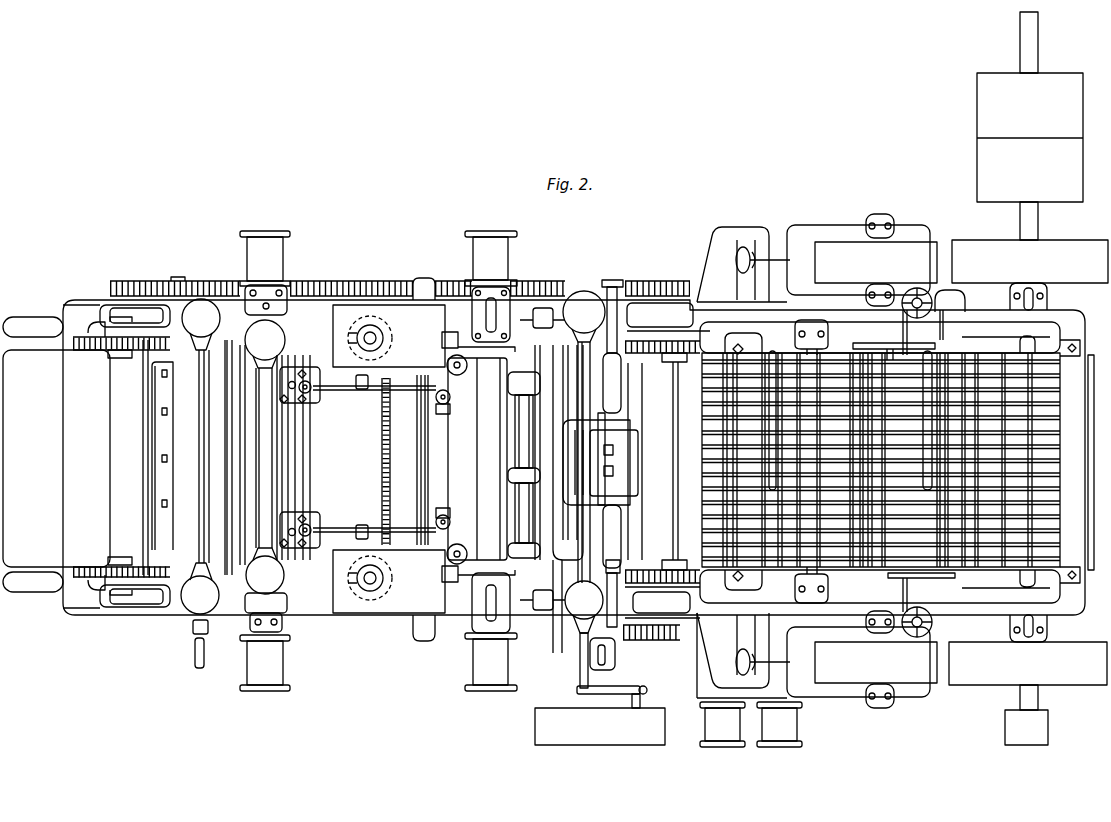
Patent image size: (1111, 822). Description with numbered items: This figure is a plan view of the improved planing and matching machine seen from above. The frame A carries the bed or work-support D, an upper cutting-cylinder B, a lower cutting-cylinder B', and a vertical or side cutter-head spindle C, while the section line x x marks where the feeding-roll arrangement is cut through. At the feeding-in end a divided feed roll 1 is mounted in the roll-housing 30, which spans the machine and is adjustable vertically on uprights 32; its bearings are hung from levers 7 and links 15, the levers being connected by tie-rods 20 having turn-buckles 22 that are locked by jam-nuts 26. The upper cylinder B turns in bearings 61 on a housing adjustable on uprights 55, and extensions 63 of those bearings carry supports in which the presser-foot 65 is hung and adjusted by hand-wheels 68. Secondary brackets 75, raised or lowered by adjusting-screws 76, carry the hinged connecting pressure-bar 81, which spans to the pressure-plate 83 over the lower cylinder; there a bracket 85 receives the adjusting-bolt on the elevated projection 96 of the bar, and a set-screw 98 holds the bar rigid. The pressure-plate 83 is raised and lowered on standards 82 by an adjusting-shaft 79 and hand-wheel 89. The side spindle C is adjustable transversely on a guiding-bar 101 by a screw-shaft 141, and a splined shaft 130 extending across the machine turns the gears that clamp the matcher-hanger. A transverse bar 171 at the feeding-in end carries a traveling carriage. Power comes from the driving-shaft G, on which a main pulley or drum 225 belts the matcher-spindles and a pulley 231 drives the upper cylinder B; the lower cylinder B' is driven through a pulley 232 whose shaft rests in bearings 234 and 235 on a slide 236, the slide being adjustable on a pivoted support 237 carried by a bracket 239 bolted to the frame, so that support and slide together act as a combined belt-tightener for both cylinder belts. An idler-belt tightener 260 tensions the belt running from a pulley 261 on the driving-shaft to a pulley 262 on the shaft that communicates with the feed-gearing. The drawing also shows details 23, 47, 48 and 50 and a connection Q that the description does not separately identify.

The feed roll 1 is at (628, 400).
The lever 7 is at (611, 280).
The link 15 is at (613, 470).
The tie-rod 20 is at (664, 461).
The turn-buckle 22 is at (622, 393).
The plunger tip 23 is at (617, 578).
The jam-nut 26 is at (441, 516).
The roll-housing 30 is at (622, 312).
The upright 32 is at (648, 300).
The operating rod 47 is at (568, 668).
The cross bar 48 is at (622, 695).
The guide tube 50 is at (570, 375).
The upright 55 is at (552, 310).
The bearing 61 is at (482, 298).
The extension 63 is at (442, 340).
The presser-foot 65 is at (470, 522).
The hand-wheel 68 is at (468, 368).
The secondary bracket 75 is at (437, 461).
The adjusting-screw 76 is at (437, 415).
The adjusting-shaft 79 is at (282, 626).
The connecting pressure-bar 81 is at (359, 460).
The standard 82 is at (248, 298).
The pressure-plate 83 is at (293, 480).
The bracket 85 is at (300, 404).
The hand-wheel 89 is at (245, 612).
The elevated projection 96 is at (313, 378).
The set-screw 98 is at (309, 390).
The guiding-bar 101 is at (422, 462).
The shaft 130 is at (440, 460).
The screw-shaft 141 is at (382, 455).
The transverse bar 171 is at (970, 304).
The main pulley 225 is at (1088, 315).
The pulley 231 is at (1028, 462).
The pulley 232 is at (876, 462).
The bearing 234 is at (880, 214).
The bearing 235 is at (900, 292).
The slide 236 is at (806, 235).
The support 237 is at (763, 460).
The bracket 239 is at (722, 275).
The idler-belt tightener 260 is at (753, 738).
The pulley 261 is at (1026, 727).
The pulley 262 is at (600, 719).
The frame A is at (348, 283).
The upper cutting-cylinder B is at (506, 461).
The lower cutting-cylinder B' is at (281, 461).
The side cutter-head spindle C is at (384, 338).
The bed D is at (548, 461).
The driving-shaft G is at (1038, 220).
The connection Q is at (1033, 697).
The section line x is at (563, 300).